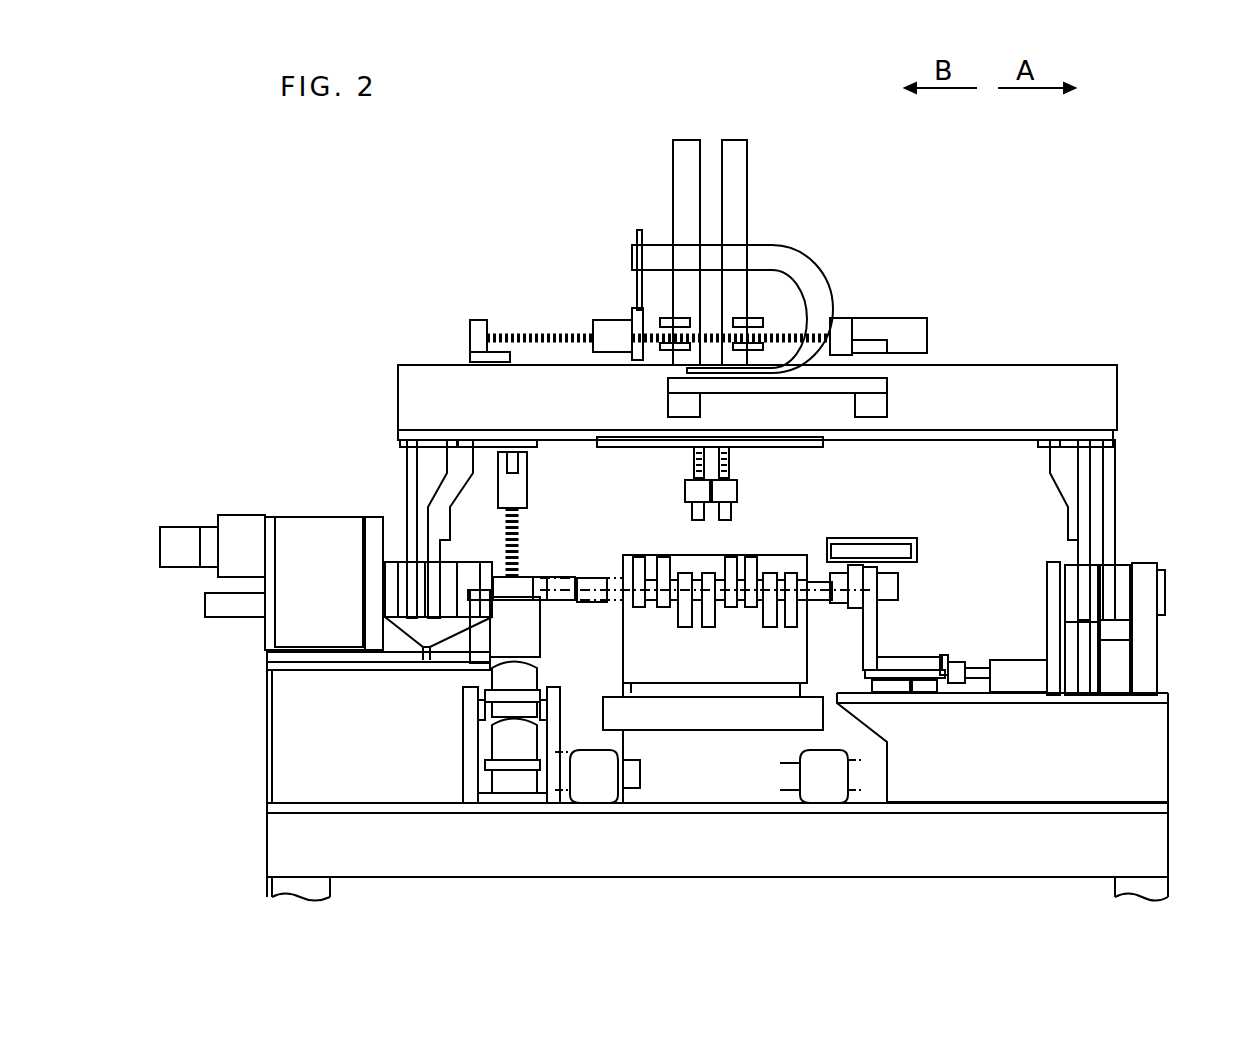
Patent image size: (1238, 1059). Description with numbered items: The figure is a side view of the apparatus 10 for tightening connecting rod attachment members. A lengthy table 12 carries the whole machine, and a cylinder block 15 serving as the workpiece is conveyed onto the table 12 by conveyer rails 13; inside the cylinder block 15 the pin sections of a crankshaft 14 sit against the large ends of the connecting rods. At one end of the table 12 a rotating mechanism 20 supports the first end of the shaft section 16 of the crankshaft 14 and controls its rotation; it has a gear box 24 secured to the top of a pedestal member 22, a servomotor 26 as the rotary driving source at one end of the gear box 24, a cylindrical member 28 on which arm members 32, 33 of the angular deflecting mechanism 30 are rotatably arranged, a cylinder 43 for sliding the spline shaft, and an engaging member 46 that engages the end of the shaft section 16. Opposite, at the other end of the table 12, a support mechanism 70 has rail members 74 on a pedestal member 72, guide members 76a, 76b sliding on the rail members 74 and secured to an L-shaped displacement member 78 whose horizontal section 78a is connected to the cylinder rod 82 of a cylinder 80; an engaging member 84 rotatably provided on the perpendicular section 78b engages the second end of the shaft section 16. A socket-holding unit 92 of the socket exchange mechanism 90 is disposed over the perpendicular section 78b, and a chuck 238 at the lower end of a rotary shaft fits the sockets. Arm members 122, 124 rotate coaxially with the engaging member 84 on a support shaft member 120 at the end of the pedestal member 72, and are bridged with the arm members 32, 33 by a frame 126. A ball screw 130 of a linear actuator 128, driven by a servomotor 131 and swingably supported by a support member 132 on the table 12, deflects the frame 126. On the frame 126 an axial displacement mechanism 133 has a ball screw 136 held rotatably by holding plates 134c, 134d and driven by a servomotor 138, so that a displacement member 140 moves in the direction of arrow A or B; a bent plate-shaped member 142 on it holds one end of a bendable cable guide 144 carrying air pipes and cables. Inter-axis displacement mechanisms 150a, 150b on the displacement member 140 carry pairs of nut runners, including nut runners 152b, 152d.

The apparatus for tightening connecting rod attachment members 10 is at (1017, 182).
The table 12 is at (705, 860).
The conveyer rails 13 is at (598, 800).
The crankshaft 14 is at (663, 548).
The cylinder block 15 is at (617, 630).
The shaft section 16 is at (607, 578).
The rotating mechanism 20 is at (278, 485).
The pedestal member 22 is at (285, 730).
The gear box 24 is at (316, 527).
The servomotor 26 is at (235, 518).
The cylindrical member 28 is at (392, 587).
The angular deflecting mechanism 30 is at (388, 347).
The arm member 32 is at (410, 463).
The arm member 33 is at (437, 530).
The cylinder 43 is at (233, 614).
The engaging member 46 is at (560, 584).
The support mechanism 70 is at (915, 580).
The pedestal member 72 is at (1158, 753).
The rail members 74 is at (862, 690).
The guide member 76a is at (900, 692).
The guide member 76b is at (938, 690).
The displacement member 78 is at (870, 655).
The horizontal section 78a is at (925, 657).
The perpendicular section 78b is at (870, 625).
The cylinder 80 is at (1017, 665).
The cylinder rod 82 is at (962, 668).
The engaging member 84 is at (893, 577).
The socket exchange mechanism 90 is at (873, 465).
The socket-holding unit 92 is at (830, 531).
The support shaft member 120 is at (1142, 573).
The arm member 122 is at (1080, 500).
The arm member 124 is at (1110, 507).
The frame 126 is at (1070, 372).
The linear actuator 128 is at (476, 675).
The ball screw 130 is at (524, 527).
The servomotor 131 is at (503, 737).
The support member 132 is at (470, 763).
The axial displacement mechanism 133 is at (606, 285).
The holding plate 134c is at (470, 338).
The holding plate 134d is at (848, 318).
The ball screw 136 is at (540, 336).
The servomotor 138 is at (920, 338).
The displacement member 140 is at (593, 320).
The plate-shaped member 142 is at (640, 230).
The cable guide 144 is at (790, 260).
The inter-axis displacement mechanism 150a is at (742, 125).
The inter-axis displacement mechanism 150b is at (681, 125).
The nut runner 152b is at (742, 166).
The nut runner 152d is at (688, 191).
The chuck 238 is at (750, 503).